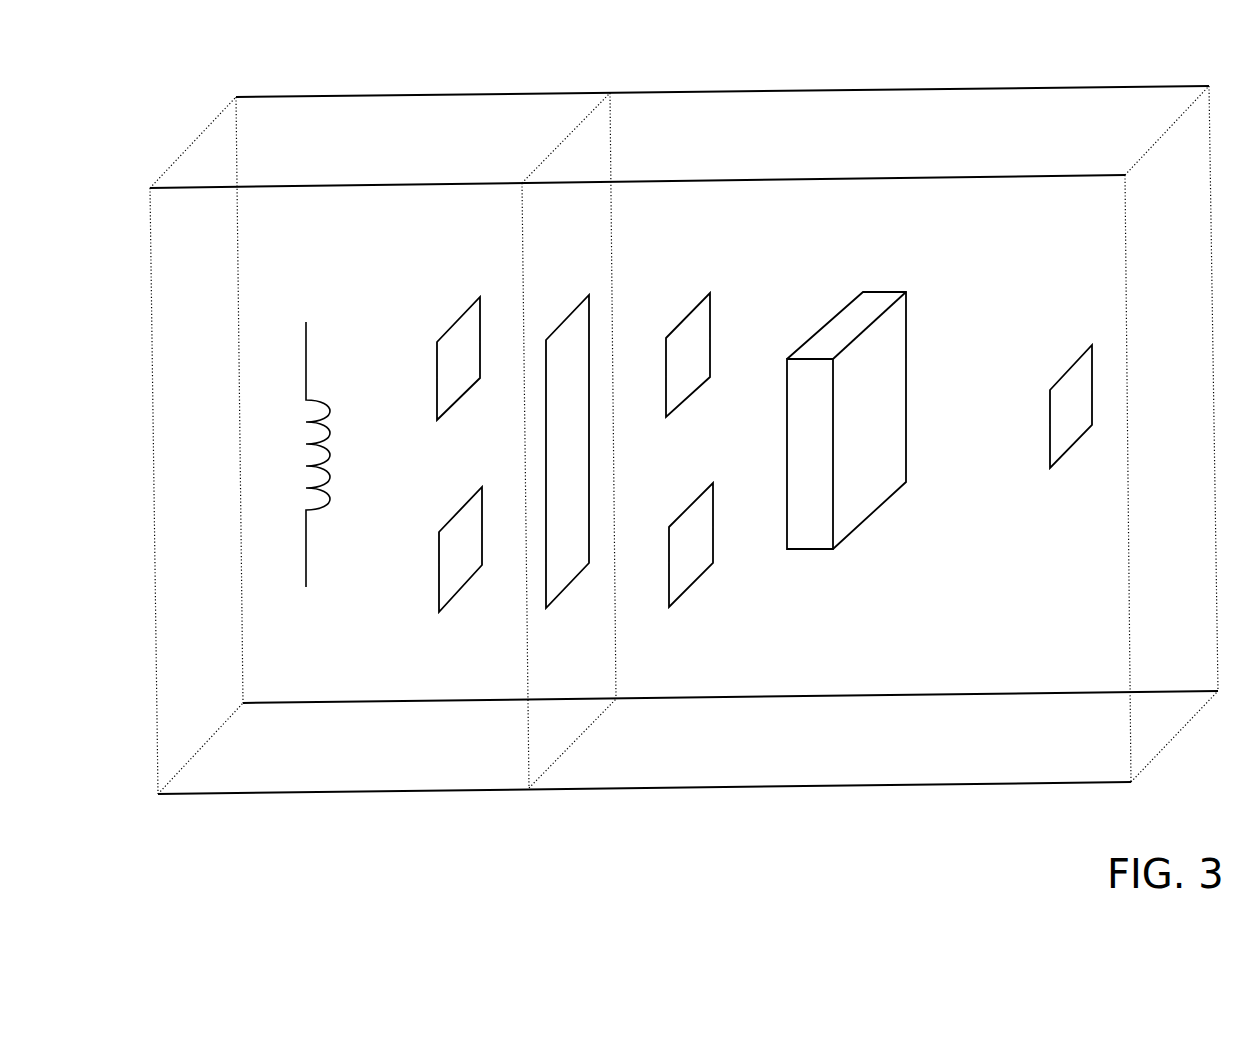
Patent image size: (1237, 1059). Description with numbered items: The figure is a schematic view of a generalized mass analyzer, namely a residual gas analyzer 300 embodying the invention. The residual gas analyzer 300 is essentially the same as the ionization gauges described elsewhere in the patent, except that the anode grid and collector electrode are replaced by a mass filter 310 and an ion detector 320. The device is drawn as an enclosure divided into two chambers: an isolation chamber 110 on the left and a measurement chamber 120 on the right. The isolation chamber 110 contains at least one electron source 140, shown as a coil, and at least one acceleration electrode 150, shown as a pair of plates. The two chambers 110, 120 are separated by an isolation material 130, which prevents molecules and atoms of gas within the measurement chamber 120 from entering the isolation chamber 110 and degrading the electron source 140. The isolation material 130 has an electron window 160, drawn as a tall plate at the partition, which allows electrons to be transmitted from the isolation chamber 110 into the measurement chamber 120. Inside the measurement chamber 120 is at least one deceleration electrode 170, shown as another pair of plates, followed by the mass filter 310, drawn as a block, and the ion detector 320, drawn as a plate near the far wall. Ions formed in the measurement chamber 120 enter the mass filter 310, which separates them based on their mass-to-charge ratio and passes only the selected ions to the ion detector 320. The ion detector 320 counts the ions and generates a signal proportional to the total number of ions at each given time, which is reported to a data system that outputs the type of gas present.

The residual gas analyzer 300 is at (937, 58).
The isolation chamber 110 is at (278, 636).
The measurement chamber 120 is at (916, 675).
The isolation material 130 is at (575, 733).
The electron source 140 is at (313, 546).
The acceleration electrode 150 is at (462, 390).
The electron window 160 is at (584, 460).
The deceleration electrode 170 is at (691, 377).
The mass filter 310 is at (880, 484).
The ion detector 320 is at (1075, 437).